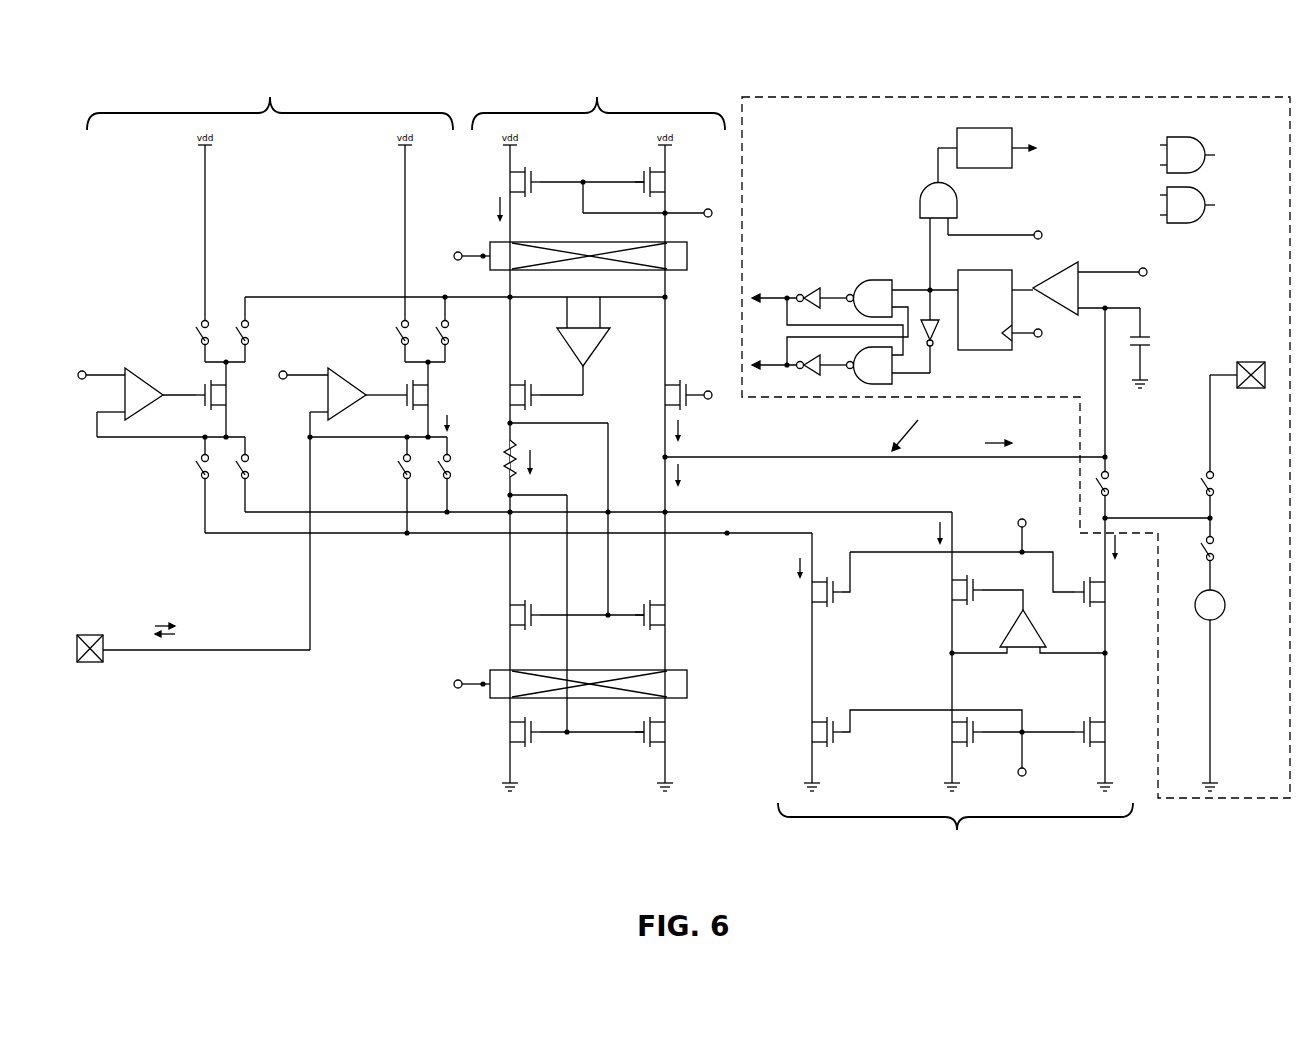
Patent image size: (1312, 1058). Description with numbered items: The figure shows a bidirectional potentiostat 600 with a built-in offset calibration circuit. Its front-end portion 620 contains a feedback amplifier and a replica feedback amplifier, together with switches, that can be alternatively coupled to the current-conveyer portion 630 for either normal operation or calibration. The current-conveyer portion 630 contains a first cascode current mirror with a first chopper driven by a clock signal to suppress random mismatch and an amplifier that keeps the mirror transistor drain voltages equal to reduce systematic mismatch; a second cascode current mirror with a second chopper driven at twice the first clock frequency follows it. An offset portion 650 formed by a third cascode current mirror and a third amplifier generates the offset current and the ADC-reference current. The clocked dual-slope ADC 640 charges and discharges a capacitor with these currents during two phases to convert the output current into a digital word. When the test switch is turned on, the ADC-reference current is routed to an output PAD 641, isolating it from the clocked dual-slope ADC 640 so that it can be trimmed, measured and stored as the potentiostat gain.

The bidirectional potentiostat 600 is at (87, 64).
The front-end portion 620 is at (273, 85).
The current-conveyer portion 630 is at (600, 85).
The clocked dual-slope ADC 640 is at (992, 93).
The output PAD 641 is at (1249, 399).
The offset portion 650 is at (957, 843).